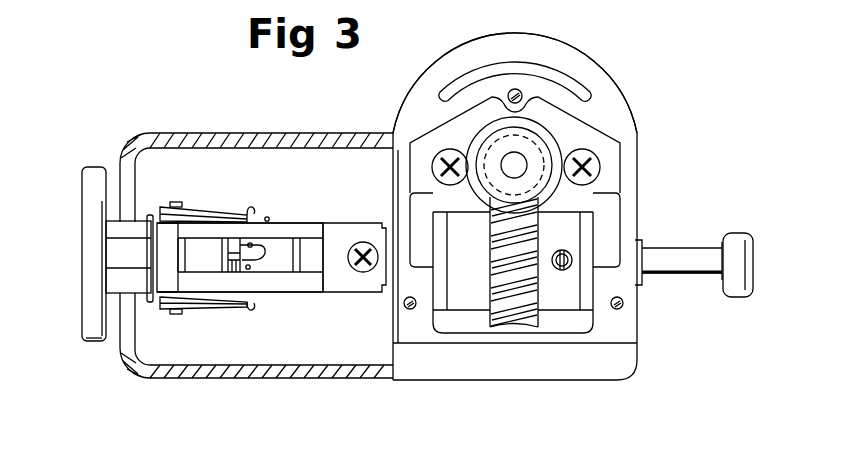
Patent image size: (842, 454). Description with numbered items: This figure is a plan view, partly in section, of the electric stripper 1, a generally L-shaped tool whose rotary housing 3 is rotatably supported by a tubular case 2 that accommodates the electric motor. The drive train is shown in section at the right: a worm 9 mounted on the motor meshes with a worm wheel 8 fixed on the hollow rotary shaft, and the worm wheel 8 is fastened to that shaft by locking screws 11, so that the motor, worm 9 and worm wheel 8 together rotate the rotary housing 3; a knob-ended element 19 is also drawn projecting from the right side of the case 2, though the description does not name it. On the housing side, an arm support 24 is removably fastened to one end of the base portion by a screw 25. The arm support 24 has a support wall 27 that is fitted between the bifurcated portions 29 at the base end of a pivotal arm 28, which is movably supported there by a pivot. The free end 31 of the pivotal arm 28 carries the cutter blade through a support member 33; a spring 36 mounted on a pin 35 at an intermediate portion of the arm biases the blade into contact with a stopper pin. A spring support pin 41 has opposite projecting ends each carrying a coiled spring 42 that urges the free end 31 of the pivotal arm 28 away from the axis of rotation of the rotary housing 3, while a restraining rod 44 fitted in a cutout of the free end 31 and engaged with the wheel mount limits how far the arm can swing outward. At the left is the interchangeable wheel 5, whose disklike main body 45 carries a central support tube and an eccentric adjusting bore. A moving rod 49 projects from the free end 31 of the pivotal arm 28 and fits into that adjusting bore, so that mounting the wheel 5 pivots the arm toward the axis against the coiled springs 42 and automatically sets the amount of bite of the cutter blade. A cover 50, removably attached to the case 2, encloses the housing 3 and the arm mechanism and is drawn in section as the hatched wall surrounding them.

The electric stripper 1 is at (620, 60).
The case 2 is at (630, 112).
The rotary housing 3 is at (334, 218).
The interchangeable wheel 5 is at (78, 180).
The worm wheel 8 is at (522, 312).
The worm 9 is at (537, 140).
The locking screws 11 is at (568, 268).
The adjusting knob 19 is at (684, 258).
The arm support 24 is at (362, 282).
The screw 25 is at (363, 242).
The support wall 27 is at (307, 265).
The pivotal arm 28 is at (215, 212).
The bifurcated portions 29 is at (301, 230).
The free end 31 is at (186, 228).
The support member 33 is at (205, 255).
The pin 35 is at (234, 270).
The spring 36 is at (257, 257).
The spring support pin 41 is at (170, 313).
The coiled spring 42 is at (250, 204).
The restraining rod 44 is at (147, 270).
The disklike main body 45 is at (95, 330).
The moving rod 49 is at (118, 248).
The cover 50 is at (277, 133).